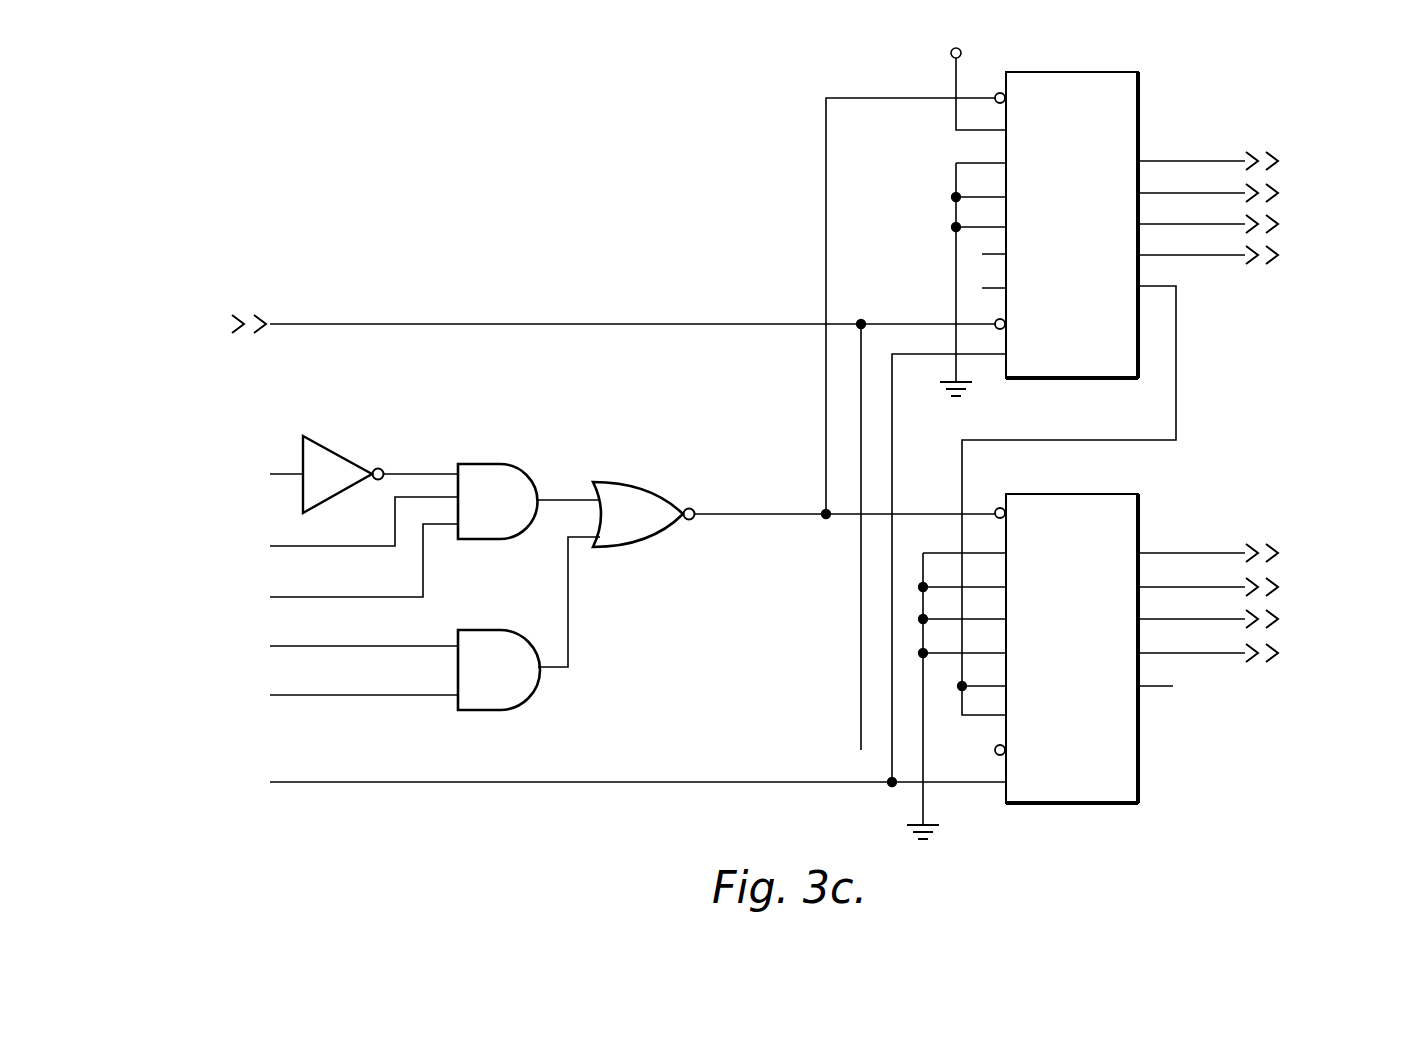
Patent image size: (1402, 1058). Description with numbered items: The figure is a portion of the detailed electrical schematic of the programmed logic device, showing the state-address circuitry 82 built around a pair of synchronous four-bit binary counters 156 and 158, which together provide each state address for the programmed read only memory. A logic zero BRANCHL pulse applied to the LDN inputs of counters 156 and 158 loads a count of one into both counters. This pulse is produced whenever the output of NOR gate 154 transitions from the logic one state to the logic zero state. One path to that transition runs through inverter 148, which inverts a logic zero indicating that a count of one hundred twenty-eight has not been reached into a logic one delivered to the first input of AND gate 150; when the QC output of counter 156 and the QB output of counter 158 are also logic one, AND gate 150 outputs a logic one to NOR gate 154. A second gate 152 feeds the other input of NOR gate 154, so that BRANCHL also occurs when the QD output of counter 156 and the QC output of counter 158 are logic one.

The state machine counter circuit 82 is at (425, 110).
The inverter 148 is at (323, 443).
The AND gate 150 is at (492, 464).
The AND gate 152 is at (507, 630).
The NOR gate 154 is at (631, 482).
The synchronous 4-bit binary counter 156 is at (1140, 90).
The synchronous 4-bit binary counter 158 is at (1140, 752).